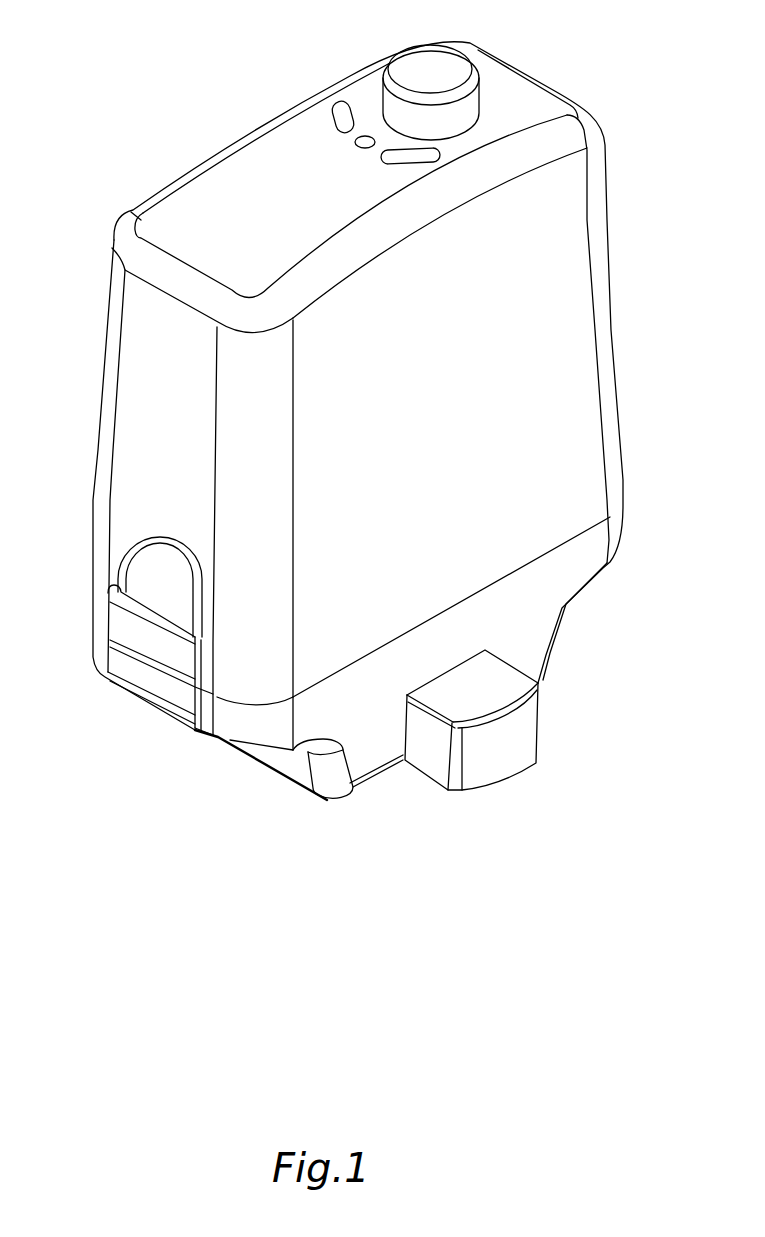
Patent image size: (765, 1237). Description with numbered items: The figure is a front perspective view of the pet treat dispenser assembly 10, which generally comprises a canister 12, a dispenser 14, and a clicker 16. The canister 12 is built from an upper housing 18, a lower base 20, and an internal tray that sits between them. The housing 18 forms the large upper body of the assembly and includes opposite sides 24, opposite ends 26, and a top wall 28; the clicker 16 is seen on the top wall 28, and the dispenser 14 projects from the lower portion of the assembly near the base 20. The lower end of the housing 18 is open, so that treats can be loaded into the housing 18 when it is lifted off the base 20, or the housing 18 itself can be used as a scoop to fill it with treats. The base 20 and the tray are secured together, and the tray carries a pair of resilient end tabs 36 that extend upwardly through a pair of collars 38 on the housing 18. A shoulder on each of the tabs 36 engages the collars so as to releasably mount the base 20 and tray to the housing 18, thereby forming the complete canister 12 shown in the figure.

The pet treat dispenser assembly 10 is at (236, 21).
The canister 12 is at (543, 407).
The dispenser 14 is at (502, 752).
The clicker 16 is at (420, 62).
The upper housing 18 is at (567, 292).
The lower base 20 is at (293, 758).
The opposite sides 24 is at (445, 436).
The opposite ends 26 is at (173, 463).
The top wall 28 is at (285, 213).
The resilient end tabs 36 is at (132, 575).
The collars 38 is at (127, 627).